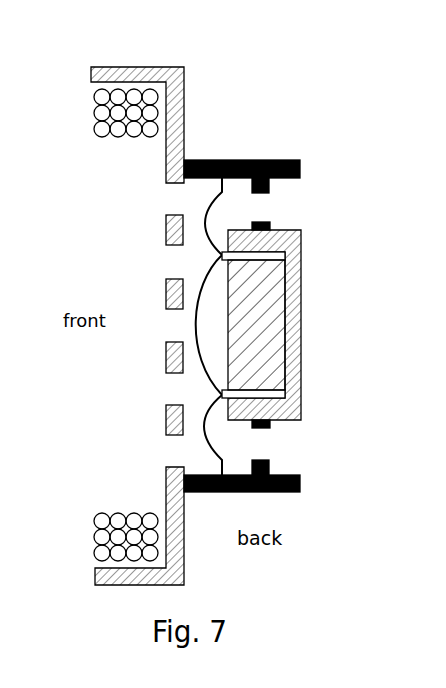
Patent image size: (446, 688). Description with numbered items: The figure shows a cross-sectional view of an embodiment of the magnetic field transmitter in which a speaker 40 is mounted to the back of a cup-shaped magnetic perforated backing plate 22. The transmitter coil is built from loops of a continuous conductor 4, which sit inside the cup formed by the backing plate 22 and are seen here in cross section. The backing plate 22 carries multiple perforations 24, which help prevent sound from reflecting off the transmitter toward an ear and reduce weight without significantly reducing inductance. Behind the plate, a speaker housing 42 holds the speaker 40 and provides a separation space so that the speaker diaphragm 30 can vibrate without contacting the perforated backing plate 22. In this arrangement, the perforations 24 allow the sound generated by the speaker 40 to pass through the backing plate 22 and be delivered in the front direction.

The conductor 4 is at (94, 97).
The perforated backing plate 22 is at (137, 67).
The perforations 24 is at (167, 263).
The speaker diaphragm 30 is at (214, 444).
The speaker 40 is at (228, 134).
The speaker housing 42 is at (301, 487).